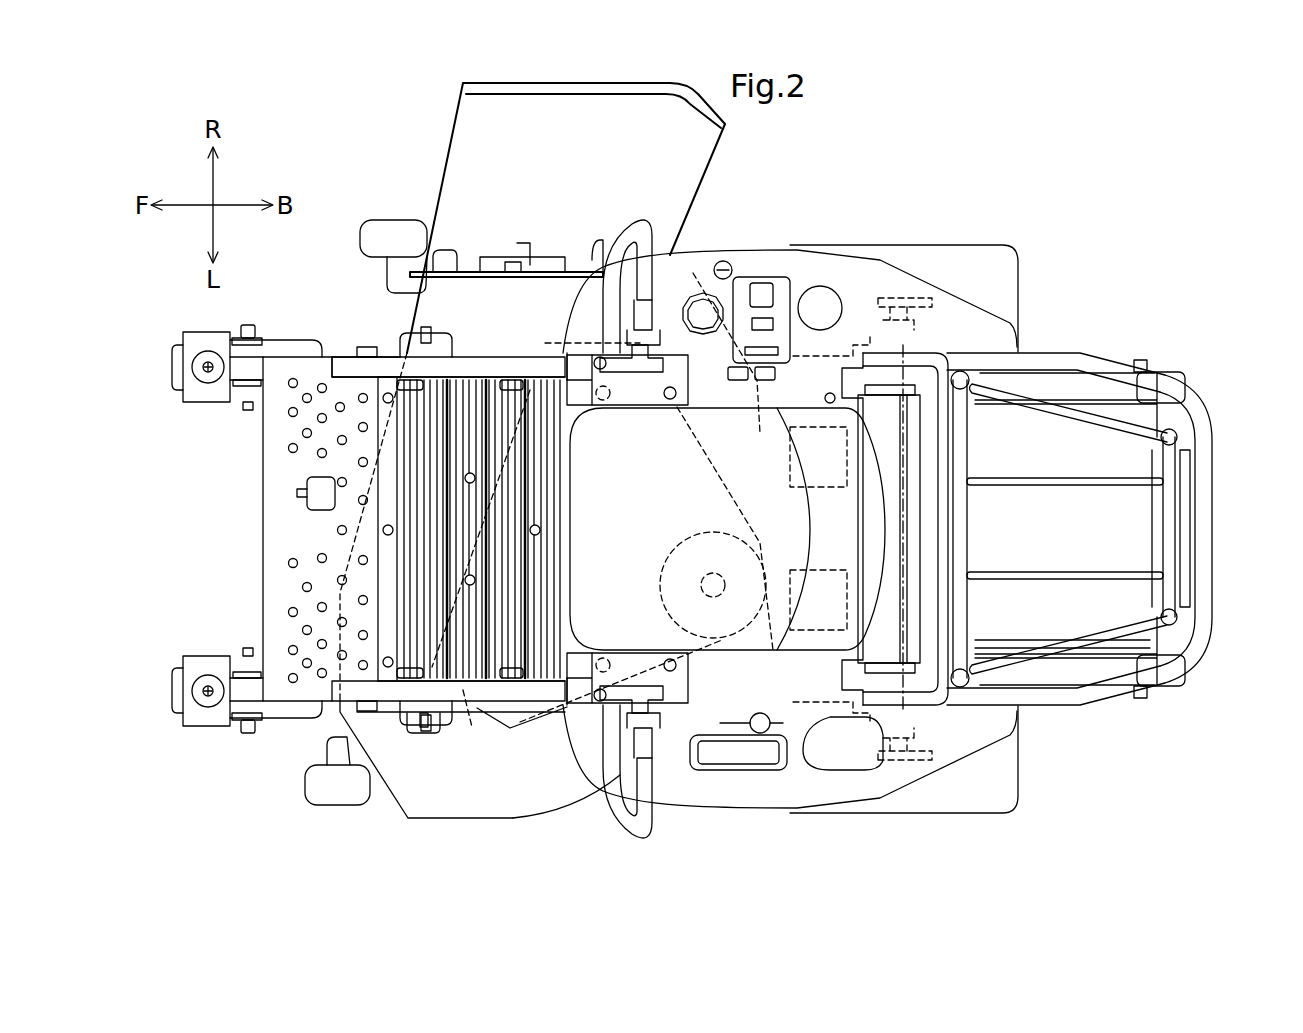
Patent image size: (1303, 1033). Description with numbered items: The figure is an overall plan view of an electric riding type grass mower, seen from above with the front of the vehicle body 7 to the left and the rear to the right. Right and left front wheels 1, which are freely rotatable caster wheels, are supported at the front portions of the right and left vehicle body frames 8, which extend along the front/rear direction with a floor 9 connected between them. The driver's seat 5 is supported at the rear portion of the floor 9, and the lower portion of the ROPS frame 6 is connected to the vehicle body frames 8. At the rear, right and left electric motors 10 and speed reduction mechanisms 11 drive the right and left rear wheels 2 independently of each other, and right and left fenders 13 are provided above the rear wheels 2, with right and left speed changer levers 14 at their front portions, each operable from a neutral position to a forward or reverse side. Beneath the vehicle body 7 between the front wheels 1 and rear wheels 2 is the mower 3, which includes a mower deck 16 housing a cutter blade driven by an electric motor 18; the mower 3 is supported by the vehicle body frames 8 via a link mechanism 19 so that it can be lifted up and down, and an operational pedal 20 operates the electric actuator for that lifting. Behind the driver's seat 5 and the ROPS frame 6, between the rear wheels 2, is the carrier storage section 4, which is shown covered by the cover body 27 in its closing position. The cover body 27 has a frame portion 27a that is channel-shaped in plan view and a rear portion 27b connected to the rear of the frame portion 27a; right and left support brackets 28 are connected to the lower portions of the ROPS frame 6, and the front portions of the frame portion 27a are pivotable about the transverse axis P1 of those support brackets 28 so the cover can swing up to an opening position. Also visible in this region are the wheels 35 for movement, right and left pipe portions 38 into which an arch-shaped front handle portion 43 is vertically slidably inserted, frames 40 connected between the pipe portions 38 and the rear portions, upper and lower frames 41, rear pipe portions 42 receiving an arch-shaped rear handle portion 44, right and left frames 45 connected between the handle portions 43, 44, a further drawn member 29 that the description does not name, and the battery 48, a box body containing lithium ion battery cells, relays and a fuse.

The front wheels 1 is at (272, 348).
The rear wheels 2 is at (960, 243).
The mower 3 is at (400, 812).
The carrier storage section 4 is at (1106, 507).
The driver's seat 5 is at (707, 410).
The ROPS frame 6 is at (930, 363).
The vehicle body 7 is at (332, 355).
The vehicle body frames 8 is at (495, 365).
The floor 9 is at (477, 387).
The electric motors 10 is at (790, 470).
The speed reduction mechanisms 11 is at (870, 343).
The fenders 13 is at (770, 262).
The speed changer levers 14 is at (627, 237).
The mower deck 16 is at (498, 808).
The electric motor 18 is at (690, 545).
The link mechanism 19 is at (438, 715).
The operational pedal 20 is at (313, 503).
The cover body 27 is at (1106, 497).
The frame portion 27a is at (1050, 353).
The rear portion 27b is at (1213, 518).
The support brackets 28 is at (898, 397).
The support member 29 is at (1070, 393).
The wheels for movement 35 is at (1177, 375).
The pipe portions 38 is at (960, 375).
The frames 40 is at (1015, 405).
The upper and lower frames 41 is at (1182, 567).
The pipe portions 42 is at (1187, 437).
The front handle portion 43 is at (963, 517).
The rear handle portion 44 is at (1170, 538).
The frames 45 is at (1078, 477).
The battery 48 is at (1103, 617).
The transverse axis P1 is at (901, 515).